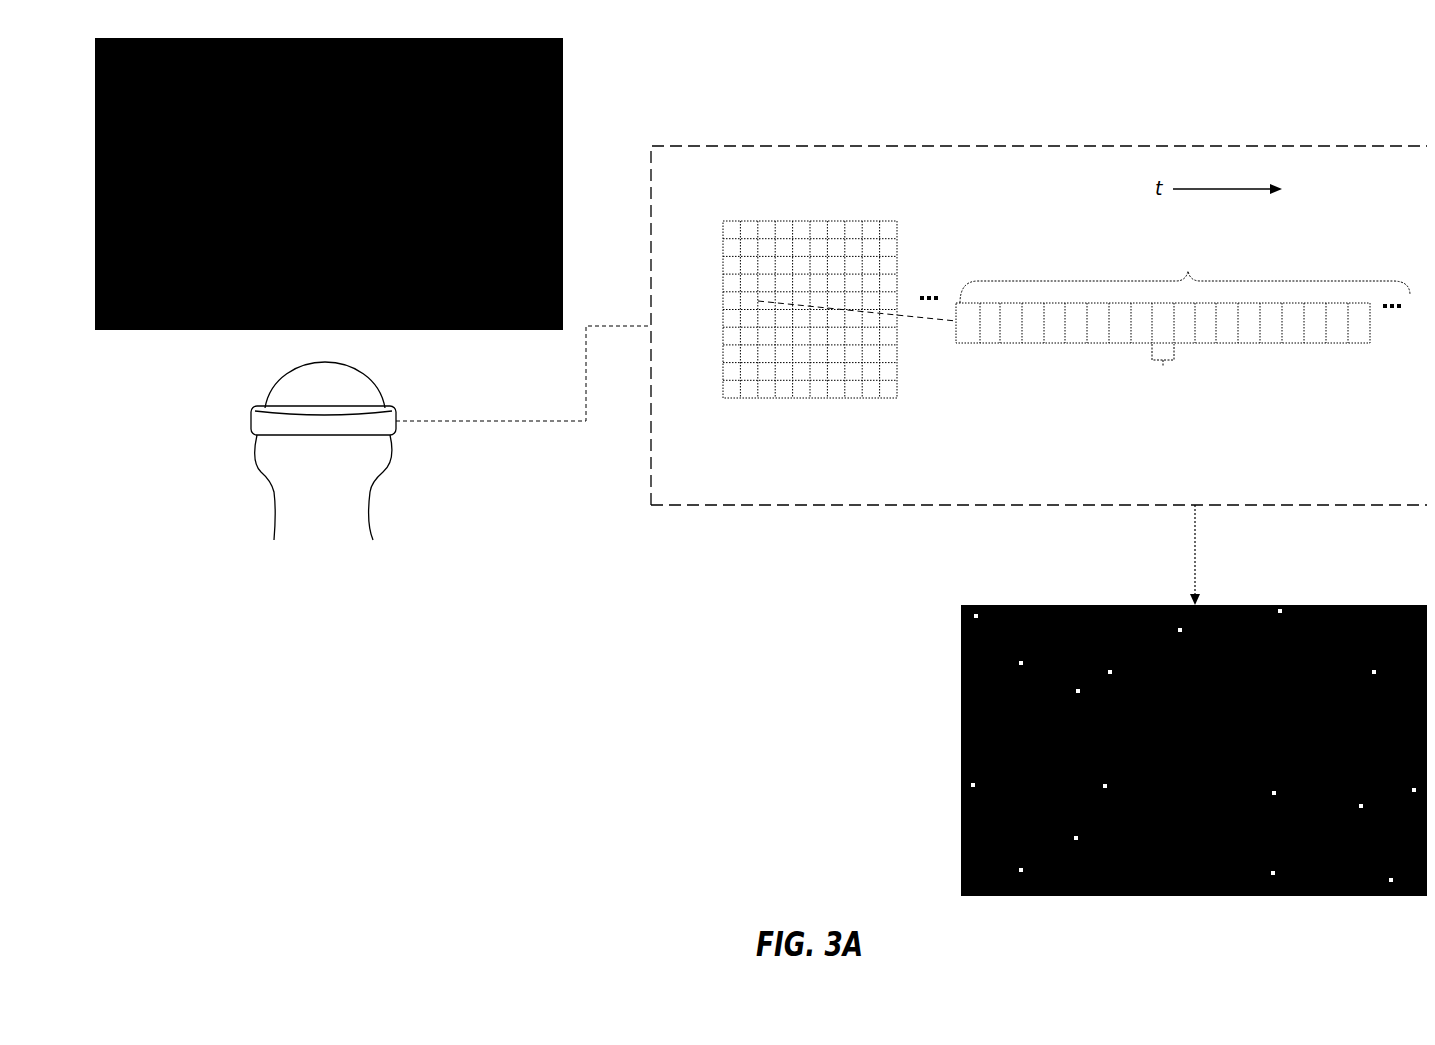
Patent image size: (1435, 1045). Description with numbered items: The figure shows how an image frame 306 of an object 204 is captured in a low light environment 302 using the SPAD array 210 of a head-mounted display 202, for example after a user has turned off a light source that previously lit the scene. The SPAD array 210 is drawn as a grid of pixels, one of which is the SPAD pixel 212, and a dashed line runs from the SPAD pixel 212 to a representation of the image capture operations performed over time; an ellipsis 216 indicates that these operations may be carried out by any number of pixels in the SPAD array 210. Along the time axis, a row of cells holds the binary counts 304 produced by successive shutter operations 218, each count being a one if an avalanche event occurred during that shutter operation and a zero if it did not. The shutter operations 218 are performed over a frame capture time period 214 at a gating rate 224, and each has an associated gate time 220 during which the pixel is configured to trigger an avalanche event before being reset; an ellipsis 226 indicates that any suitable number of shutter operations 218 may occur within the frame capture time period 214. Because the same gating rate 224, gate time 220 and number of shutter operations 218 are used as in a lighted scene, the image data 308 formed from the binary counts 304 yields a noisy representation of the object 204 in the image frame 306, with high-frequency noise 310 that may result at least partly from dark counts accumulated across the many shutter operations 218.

The head-mounted display 202 is at (260, 476).
The object 204 is at (417, 117).
The SPAD array 210 is at (708, 236).
The SPAD pixel 212 is at (750, 296).
The frame capture time period 214 is at (1185, 274).
The ellipsis 216 is at (921, 275).
The shutter operations 218 is at (1005, 335).
The gate time 220 is at (1163, 389).
The gating rate 224 is at (1352, 379).
The ellipsis 226 is at (1385, 312).
The low light environment 302 is at (555, 92).
The binary counts 304 is at (1241, 335).
The image frame 306 is at (1073, 597).
The image data 308 is at (1254, 680).
The noise 310 is at (1258, 793).